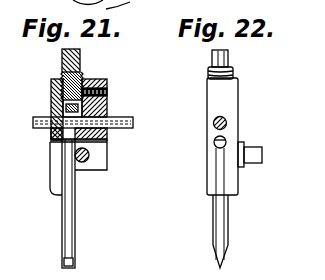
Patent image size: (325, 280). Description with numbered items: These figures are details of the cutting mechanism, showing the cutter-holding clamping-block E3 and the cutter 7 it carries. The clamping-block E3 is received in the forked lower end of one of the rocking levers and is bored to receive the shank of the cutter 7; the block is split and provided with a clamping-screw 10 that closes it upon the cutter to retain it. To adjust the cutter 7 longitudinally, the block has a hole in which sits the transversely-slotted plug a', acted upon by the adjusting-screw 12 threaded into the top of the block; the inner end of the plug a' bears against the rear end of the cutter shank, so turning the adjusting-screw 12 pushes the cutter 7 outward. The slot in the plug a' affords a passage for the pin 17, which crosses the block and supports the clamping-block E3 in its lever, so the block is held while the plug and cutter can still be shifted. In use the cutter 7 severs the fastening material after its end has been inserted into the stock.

In FIG. 21, the adjusting-screw 12 is at (83, 74).
In FIG. 22, the adjusting-screw 12 is at (229, 64).
In FIG. 21, the cutter-holding clamping-block E3 is at (108, 104).
In FIG. 22, the cutter-holding clamping-block E3 is at (275, 100).
In FIG. 21, the transversely-slotted plug a' is at (43, 109).
In FIG. 21, the pin 17 is at (94, 124).
In FIG. 22, the pin 17 is at (226, 122).
In FIG. 21, the clamping-screw 10 is at (84, 162).
In FIG. 22, the clamping-screw 10 is at (244, 147).
In FIG. 21, the cutter 7 is at (75, 238).
In FIG. 22, the cutter 7 is at (214, 228).